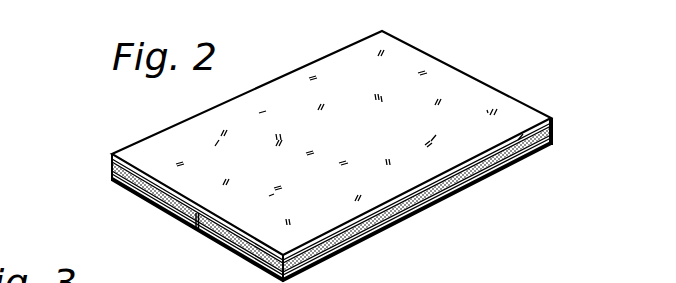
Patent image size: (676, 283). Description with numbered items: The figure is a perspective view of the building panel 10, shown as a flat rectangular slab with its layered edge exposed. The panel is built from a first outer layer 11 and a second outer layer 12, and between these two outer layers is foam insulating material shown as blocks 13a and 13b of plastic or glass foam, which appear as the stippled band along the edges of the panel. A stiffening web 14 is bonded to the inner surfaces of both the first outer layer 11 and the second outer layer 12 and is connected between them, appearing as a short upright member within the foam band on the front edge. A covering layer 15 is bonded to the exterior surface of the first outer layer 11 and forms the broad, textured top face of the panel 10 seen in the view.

The building panel 10 is at (467, 28).
The first outer layer 11 is at (553, 132).
The second outer layer 12 is at (525, 155).
The block of foam insulating material 13a is at (114, 167).
The block of foam insulating material 13b is at (450, 194).
The stiffening web 14 is at (188, 218).
The covering layer 15 is at (466, 88).